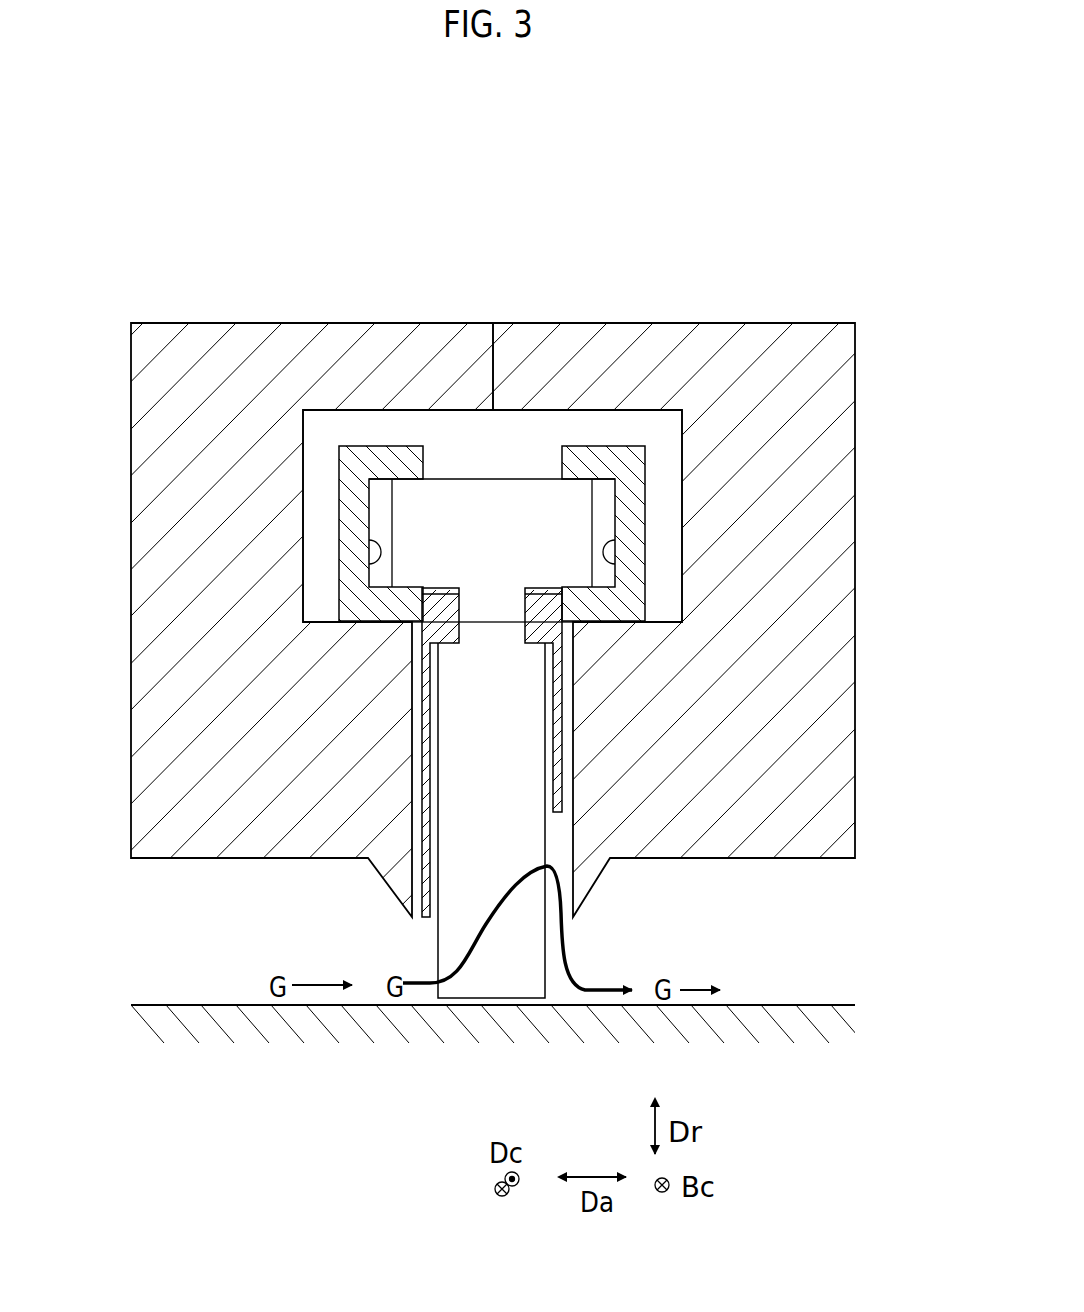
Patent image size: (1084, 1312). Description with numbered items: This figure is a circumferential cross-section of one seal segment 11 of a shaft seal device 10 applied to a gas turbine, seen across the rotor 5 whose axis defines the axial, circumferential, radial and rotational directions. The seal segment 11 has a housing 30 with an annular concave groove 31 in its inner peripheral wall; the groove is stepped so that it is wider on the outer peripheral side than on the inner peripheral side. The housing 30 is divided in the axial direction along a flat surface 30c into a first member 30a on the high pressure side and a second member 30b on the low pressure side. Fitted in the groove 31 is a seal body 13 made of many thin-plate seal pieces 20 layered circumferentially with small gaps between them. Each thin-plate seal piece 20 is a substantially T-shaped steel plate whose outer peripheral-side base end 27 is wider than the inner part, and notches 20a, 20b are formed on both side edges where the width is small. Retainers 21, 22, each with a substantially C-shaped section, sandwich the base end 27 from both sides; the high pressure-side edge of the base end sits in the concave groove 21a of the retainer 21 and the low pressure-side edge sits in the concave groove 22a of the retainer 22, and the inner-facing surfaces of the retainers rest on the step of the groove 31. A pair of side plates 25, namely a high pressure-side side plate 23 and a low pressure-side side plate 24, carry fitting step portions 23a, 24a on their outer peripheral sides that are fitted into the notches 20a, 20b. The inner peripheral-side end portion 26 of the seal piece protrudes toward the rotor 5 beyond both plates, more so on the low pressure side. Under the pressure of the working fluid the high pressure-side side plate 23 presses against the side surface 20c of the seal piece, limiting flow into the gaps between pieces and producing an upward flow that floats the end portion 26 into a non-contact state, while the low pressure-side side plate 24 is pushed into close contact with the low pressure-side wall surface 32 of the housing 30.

The rotor 5 is at (800, 1013).
The shaft seal device 10 is at (542, 649).
The seal segment 11 is at (788, 284).
The seal body 13 is at (450, 462).
The thin-plate seal piece 20 is at (455, 815).
The notch 20a is at (455, 624).
The notch 20b is at (534, 626).
The side surface 20c is at (412, 883).
The retainer 21 is at (355, 513).
The concave groove 21a is at (378, 564).
The retainer 22 is at (627, 518).
The concave groove 22a is at (617, 563).
The high pressure-side side plate 23 is at (405, 758).
The fitting step portion 23a is at (443, 612).
The low pressure-side side plate 24 is at (572, 735).
The fitting step portion 24a is at (540, 610).
The pair of side plates 25 is at (492, 714).
The inner peripheral-side end portion 26 is at (490, 980).
The outer peripheral-side base end 27 is at (492, 488).
The housing 30 is at (542, 566).
The first member 30a is at (155, 388).
The second member 30b is at (842, 350).
The flat surface 30c is at (487, 353).
The annular concave groove 31 is at (548, 430).
The low pressure-side wall surface 32 is at (566, 808).